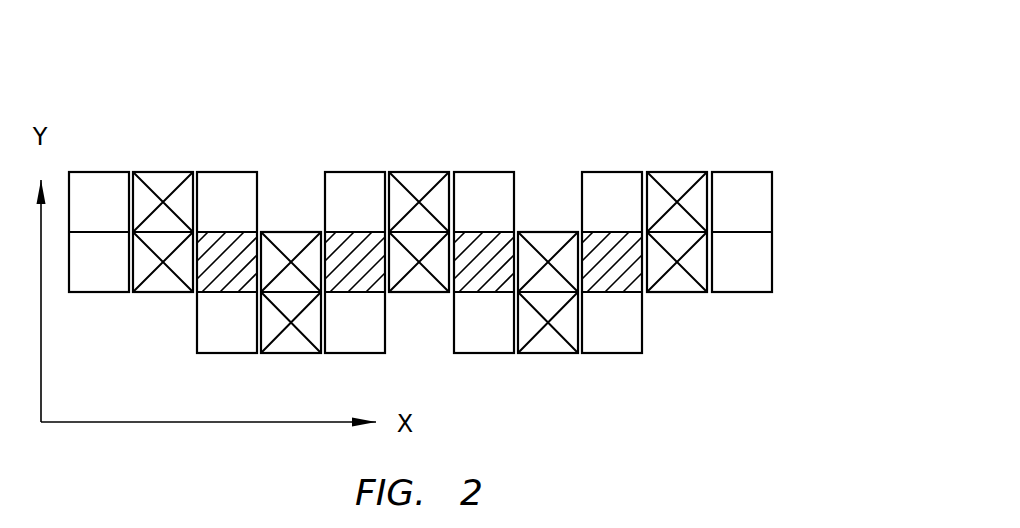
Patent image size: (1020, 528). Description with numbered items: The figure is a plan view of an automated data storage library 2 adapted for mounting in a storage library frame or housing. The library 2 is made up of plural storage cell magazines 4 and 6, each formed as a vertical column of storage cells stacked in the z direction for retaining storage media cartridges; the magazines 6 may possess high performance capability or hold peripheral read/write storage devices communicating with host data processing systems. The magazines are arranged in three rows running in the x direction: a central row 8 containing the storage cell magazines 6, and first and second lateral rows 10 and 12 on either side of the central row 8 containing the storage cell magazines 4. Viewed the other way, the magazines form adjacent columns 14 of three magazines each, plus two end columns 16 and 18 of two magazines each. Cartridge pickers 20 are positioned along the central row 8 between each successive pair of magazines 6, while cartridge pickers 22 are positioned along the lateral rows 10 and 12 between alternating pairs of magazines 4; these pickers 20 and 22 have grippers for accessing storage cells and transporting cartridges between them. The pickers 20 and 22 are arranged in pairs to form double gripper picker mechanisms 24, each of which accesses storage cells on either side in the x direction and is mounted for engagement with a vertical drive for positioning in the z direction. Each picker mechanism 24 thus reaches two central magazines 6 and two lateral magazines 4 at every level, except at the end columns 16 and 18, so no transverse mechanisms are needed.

The data storage library 2 is at (206, 76).
The storage cell magazine 4 is at (113, 172).
The storage cell magazine 6 is at (232, 240).
The central row 8 is at (787, 284).
The first lateral row 10 is at (797, 190).
The second lateral row 12 is at (680, 344).
The column 14 is at (215, 164).
The end column 16 is at (80, 164).
The end column 18 is at (735, 164).
The cartridge picker 20 is at (290, 232).
The cartridge picker 22 is at (148, 172).
The double gripper picker mechanism 24 is at (453, 162).